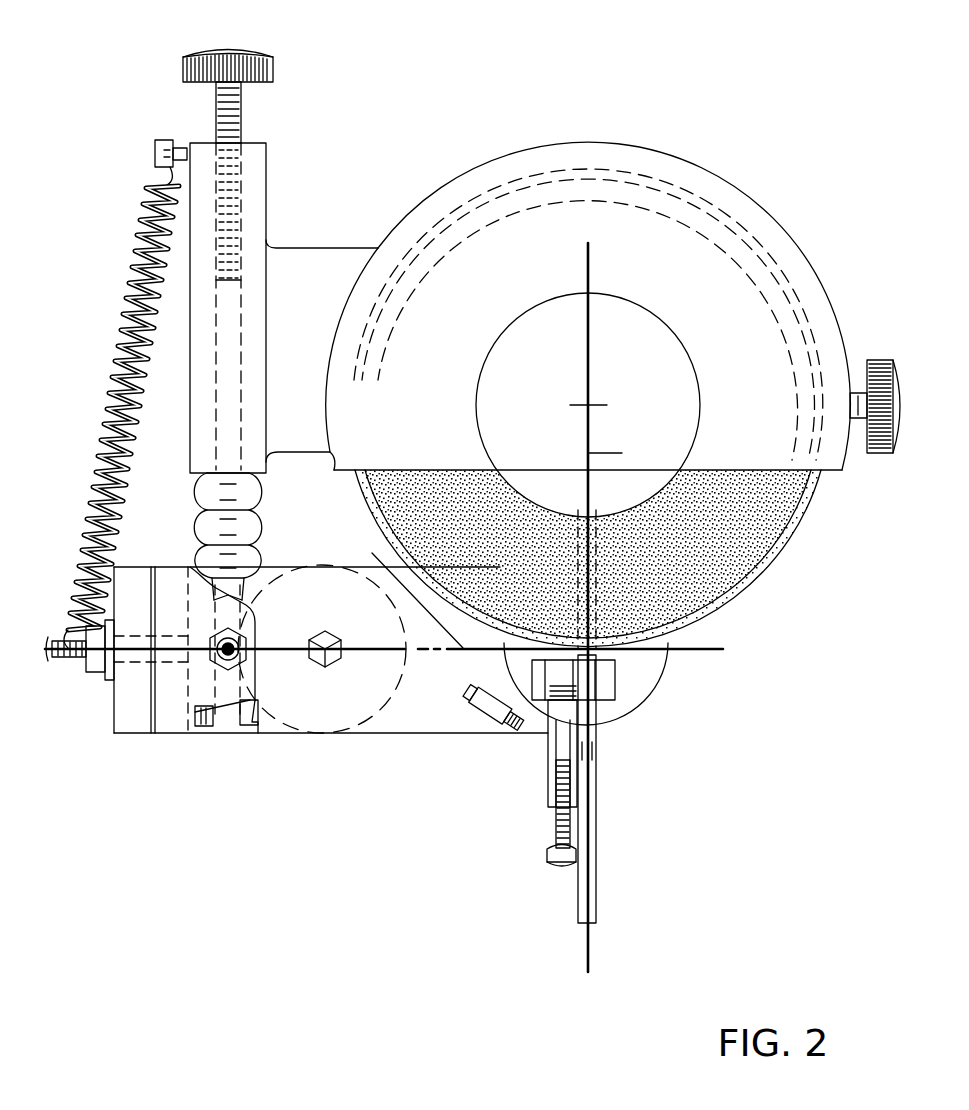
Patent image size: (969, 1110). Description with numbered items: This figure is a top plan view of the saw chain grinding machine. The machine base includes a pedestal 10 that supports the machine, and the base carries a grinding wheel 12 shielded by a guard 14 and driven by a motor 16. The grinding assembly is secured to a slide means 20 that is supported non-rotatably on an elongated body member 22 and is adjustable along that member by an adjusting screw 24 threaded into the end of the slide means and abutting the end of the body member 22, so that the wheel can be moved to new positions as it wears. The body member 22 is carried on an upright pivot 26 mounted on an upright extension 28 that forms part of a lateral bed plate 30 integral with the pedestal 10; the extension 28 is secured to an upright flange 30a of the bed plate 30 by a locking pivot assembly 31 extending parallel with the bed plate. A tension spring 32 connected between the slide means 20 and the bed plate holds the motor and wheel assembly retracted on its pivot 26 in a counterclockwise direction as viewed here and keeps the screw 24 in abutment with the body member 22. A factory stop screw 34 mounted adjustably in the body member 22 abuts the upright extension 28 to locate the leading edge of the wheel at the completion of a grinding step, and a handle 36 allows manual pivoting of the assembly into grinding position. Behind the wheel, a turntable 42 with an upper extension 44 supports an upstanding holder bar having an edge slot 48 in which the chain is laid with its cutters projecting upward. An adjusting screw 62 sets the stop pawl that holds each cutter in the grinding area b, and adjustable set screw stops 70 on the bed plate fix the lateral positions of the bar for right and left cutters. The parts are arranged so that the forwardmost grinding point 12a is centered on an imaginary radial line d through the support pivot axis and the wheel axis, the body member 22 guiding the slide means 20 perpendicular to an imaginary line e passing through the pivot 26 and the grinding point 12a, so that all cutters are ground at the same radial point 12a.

The pedestal 10 is at (375, 720).
The grinding wheel 12 is at (740, 537).
The grinding point 12a is at (552, 718).
The guard 14 is at (655, 162).
The motor 16 is at (640, 305).
The slide means 20 is at (262, 174).
The elongated body member 22 is at (246, 596).
The adjusting screw 24 is at (275, 58).
The upright pivot 26 is at (245, 655).
The upright extension 28 is at (172, 720).
The lateral bed plate 30 is at (437, 733).
The upright flange 30a is at (135, 718).
The locking pivot assembly 31 is at (95, 672).
The tension spring 32 is at (117, 342).
The factory stop screw 34 is at (207, 718).
The handle 36 is at (878, 362).
The turntable 42 is at (620, 718).
The upper extension 44 is at (625, 672).
The edge slot 48 is at (597, 862).
The adjusting screw 62 is at (548, 863).
The adjustable set screw stops 70 is at (483, 722).
The grinding area b is at (597, 650).
The imaginary radial line d is at (616, 455).
The imaginary line e is at (409, 590).